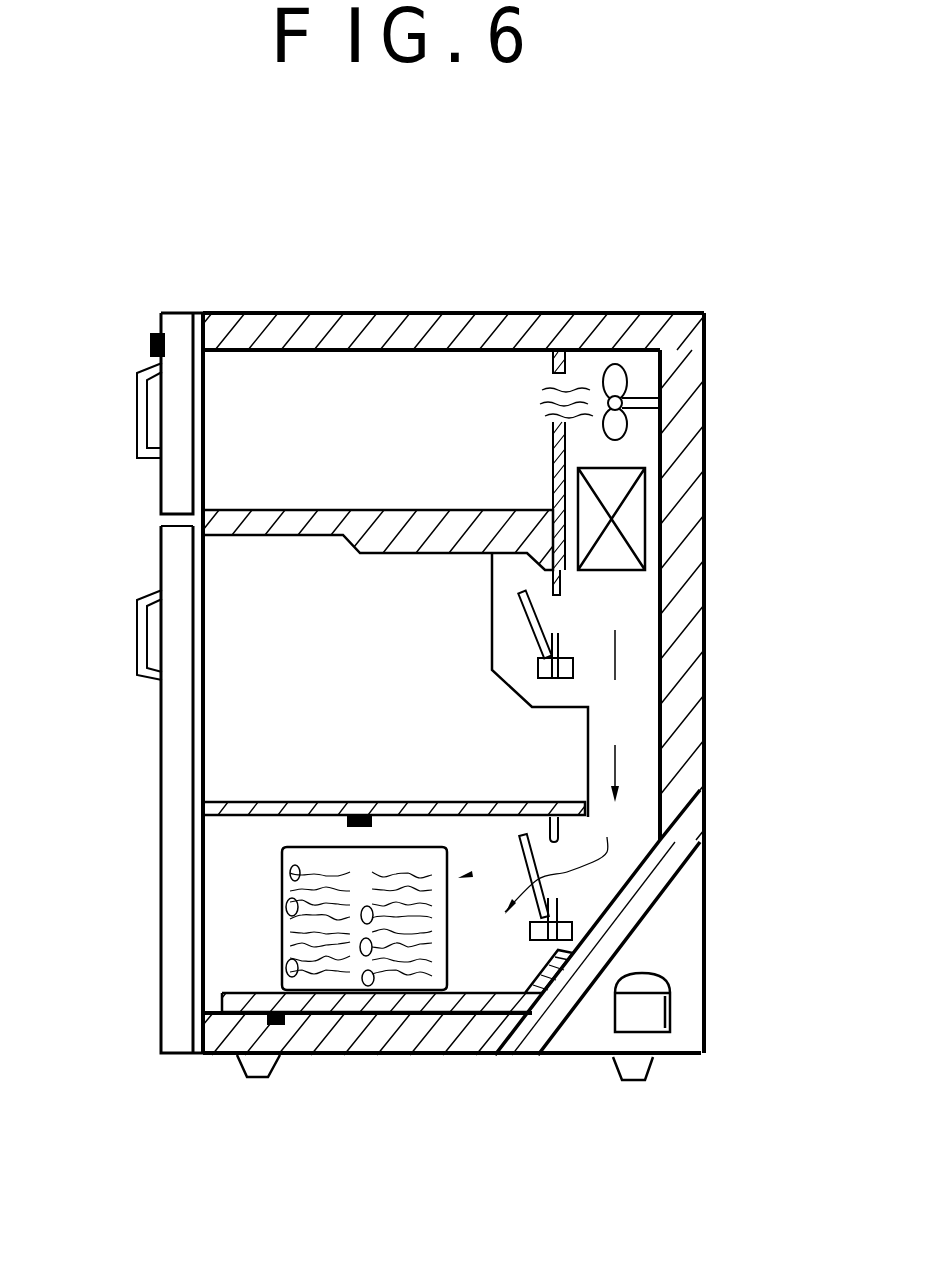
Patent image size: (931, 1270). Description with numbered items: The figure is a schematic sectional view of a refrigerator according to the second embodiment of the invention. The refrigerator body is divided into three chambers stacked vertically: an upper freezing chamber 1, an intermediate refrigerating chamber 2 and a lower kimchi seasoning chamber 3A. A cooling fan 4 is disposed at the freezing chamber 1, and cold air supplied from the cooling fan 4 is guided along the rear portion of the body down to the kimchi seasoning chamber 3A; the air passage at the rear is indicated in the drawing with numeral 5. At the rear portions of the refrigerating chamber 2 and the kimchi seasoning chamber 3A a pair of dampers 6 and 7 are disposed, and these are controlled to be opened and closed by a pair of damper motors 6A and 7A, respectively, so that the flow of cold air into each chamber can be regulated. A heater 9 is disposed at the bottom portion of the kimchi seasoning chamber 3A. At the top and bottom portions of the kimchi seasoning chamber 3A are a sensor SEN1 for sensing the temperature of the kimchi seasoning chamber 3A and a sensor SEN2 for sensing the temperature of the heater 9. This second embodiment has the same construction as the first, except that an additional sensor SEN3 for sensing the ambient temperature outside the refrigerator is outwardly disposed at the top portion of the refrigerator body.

The upper freezing chamber 1 is at (215, 458).
The intermediate refrigerating chamber 2 is at (220, 695).
The lower kimchi seasoning chamber 3A is at (210, 848).
The cooling fan 4 is at (624, 396).
The air duct 5 is at (645, 766).
The damper 6 is at (533, 620).
The damper motor 6A is at (573, 667).
The damper 7 is at (460, 877).
The damper motor 7A is at (572, 930).
The heater 9 is at (417, 1013).
The sensor SEN1 is at (368, 802).
The sensor SEN2 is at (272, 1025).
The sensor SEN3 is at (150, 345).